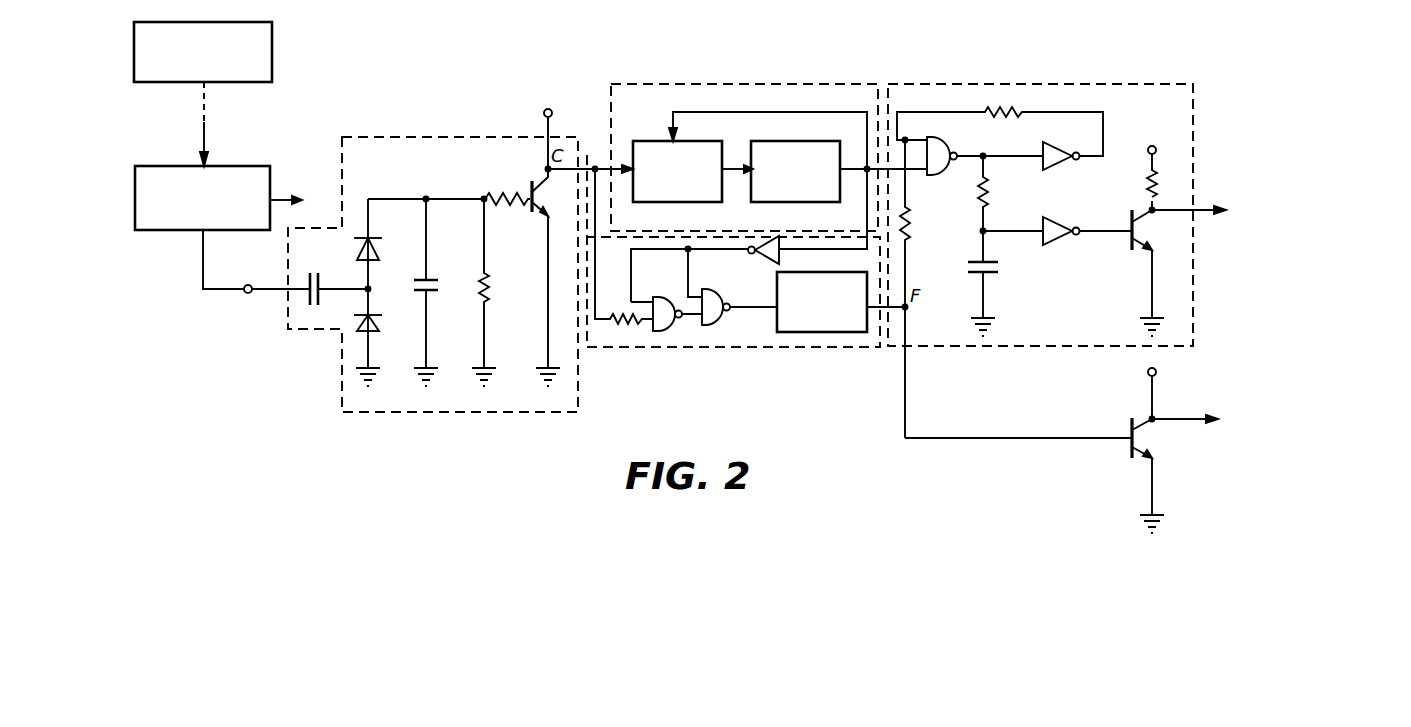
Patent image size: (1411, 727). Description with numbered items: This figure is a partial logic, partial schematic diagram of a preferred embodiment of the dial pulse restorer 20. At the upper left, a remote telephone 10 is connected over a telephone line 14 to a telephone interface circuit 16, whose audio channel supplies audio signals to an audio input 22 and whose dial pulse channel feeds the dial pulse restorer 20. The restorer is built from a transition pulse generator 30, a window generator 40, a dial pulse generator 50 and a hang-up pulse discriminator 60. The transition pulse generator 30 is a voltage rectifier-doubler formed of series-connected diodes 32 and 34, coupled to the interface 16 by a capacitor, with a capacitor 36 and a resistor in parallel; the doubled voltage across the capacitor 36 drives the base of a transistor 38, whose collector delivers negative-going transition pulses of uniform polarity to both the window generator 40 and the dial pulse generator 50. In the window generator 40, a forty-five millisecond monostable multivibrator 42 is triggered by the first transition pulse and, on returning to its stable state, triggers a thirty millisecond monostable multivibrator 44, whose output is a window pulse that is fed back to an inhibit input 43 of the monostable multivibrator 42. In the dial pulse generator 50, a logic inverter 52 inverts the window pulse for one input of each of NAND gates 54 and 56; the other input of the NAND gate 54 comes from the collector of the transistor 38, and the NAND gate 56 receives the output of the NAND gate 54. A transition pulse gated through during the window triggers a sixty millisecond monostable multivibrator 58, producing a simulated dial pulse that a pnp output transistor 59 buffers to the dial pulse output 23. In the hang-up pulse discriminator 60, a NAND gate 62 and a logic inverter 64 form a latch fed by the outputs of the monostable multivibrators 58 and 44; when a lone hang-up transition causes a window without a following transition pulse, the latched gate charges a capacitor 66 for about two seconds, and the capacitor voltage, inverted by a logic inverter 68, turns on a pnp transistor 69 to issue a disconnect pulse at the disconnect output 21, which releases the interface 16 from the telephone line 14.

The remote telephone 10 is at (195, 4).
The telephone line 14 is at (205, 110).
The telephone interface circuit 16 is at (143, 167).
The audio input 22 is at (279, 204).
The transition pulse generator 30 is at (381, 142).
The diode 32 is at (380, 250).
The diode 34 is at (374, 322).
The capacitor 36 is at (438, 285).
The transistor 38 is at (536, 172).
The dial pulse restorer 20 is at (769, 144).
The window generator 40 is at (656, 82).
The monostable multivibrator 42 is at (676, 203).
The inhibit input 43 is at (671, 134).
The monostable multivibrator 44 is at (819, 142).
The dial pulse generator 50 is at (612, 349).
The logic inverter 52 is at (777, 229).
The NAND gate 54 is at (661, 302).
The NAND gate 56 is at (712, 300).
The monostable multivibrator 58 is at (777, 327).
The hang-up pulse discriminator 60 is at (949, 82).
The NAND gate 62 is at (943, 141).
The logic inverter 64 is at (1057, 152).
The capacitor 66 is at (968, 266).
The logic inverter 68 is at (1058, 244).
The transistor 69 is at (1143, 210).
The disconnect output 21 is at (1207, 220).
The output transistor 59 is at (1140, 458).
The dial pulse output 23 is at (1184, 426).